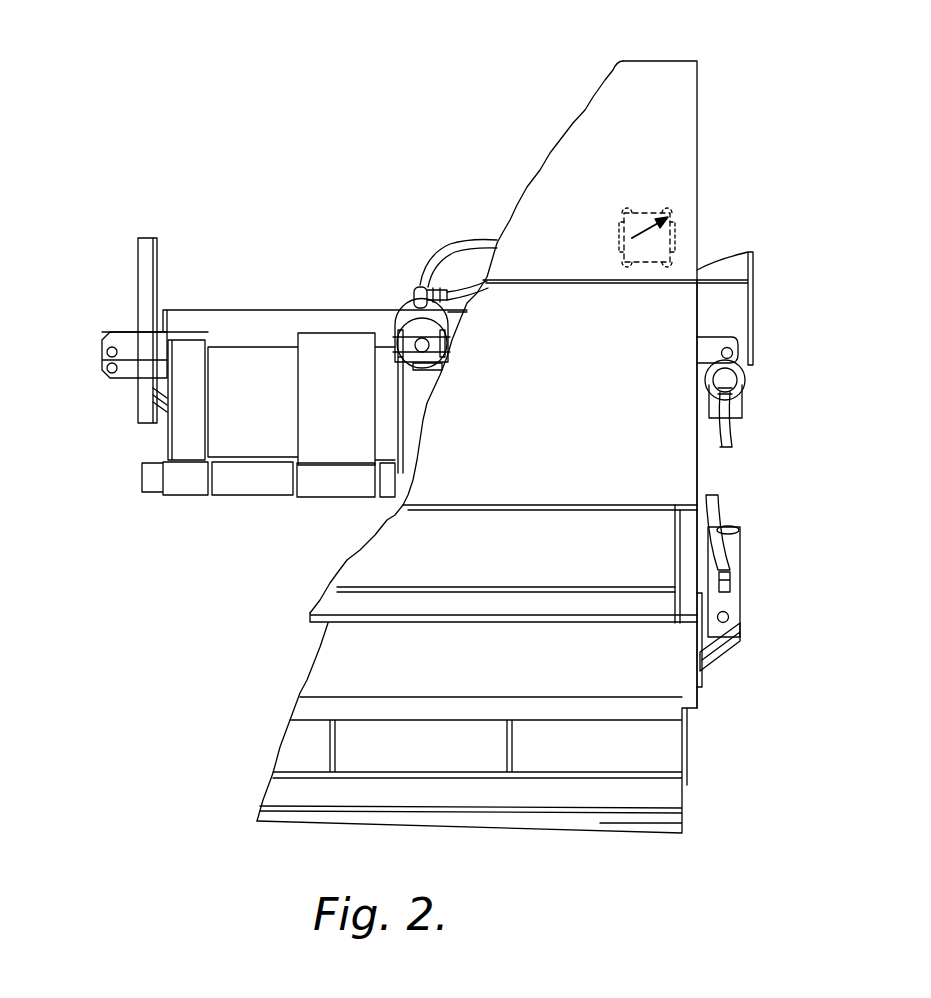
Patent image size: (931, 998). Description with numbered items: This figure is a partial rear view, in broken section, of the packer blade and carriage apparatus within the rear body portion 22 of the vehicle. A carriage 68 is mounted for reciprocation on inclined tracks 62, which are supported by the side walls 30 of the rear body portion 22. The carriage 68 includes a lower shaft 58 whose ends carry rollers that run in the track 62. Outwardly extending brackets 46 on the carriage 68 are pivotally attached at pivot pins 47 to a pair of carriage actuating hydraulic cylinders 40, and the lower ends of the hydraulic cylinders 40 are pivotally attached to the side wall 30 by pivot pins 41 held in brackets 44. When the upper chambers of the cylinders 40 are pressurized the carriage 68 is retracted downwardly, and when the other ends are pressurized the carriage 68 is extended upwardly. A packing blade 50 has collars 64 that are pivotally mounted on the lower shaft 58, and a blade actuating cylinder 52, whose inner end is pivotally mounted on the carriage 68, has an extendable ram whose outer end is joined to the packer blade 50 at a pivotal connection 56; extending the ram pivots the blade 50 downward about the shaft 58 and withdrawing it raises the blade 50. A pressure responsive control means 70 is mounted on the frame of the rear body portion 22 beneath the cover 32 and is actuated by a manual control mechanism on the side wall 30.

The rear body portion 22 is at (673, 61).
The cover 32 is at (687, 148).
The pressure responsive control means 70 is at (670, 213).
The inclined track 62 is at (152, 250).
The carriage 68 is at (193, 312).
The collar 64 is at (383, 481).
The lower shaft 58 is at (142, 475).
The bracket 46 is at (123, 332).
The pivot pin 47 is at (733, 351).
The carriage actuating hydraulic cylinder 40 is at (735, 412).
The pivot pin 41 is at (735, 618).
The bracket 44 is at (720, 647).
The side wall 30 is at (698, 466).
The packing blade 50 is at (393, 552).
The blade actuating cylinder 52 is at (398, 287).
The pivotal connection 56 is at (395, 343).